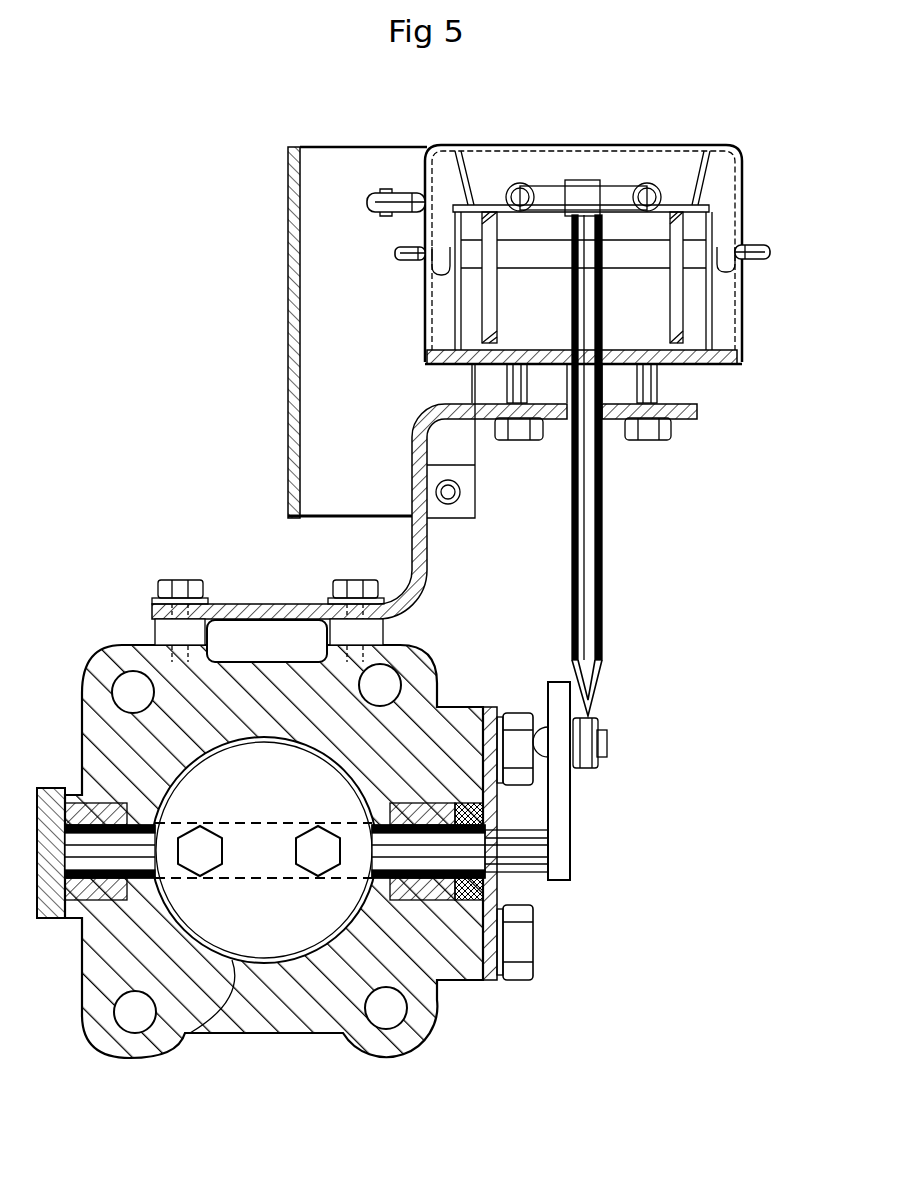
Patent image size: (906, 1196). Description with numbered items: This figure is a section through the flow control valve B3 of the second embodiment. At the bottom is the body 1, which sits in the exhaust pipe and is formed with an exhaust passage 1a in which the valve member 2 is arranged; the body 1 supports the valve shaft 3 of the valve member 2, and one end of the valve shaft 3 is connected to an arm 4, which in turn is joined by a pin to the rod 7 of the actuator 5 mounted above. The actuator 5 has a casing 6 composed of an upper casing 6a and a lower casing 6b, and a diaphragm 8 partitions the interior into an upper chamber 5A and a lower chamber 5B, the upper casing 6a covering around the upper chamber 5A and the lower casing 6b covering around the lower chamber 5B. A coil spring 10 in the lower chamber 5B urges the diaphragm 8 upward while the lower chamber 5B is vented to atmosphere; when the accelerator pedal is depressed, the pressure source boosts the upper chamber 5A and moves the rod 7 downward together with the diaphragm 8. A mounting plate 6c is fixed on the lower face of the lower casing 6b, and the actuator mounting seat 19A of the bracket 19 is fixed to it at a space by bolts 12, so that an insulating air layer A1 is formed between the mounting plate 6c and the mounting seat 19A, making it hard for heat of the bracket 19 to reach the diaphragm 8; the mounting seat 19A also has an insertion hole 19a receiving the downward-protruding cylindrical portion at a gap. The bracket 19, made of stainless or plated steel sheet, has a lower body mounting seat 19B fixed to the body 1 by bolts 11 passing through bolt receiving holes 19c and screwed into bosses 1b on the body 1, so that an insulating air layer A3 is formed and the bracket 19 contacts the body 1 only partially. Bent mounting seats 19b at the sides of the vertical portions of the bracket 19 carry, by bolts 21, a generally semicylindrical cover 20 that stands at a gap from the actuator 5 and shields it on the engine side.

The body 1 is at (260, 830).
The exhaust passage 1a is at (215, 1033).
The bosses 1b is at (163, 632).
The valve member 2 is at (330, 1030).
The valve shaft 3 is at (445, 1003).
The arm 4 is at (562, 840).
The actuator 5 is at (632, 205).
The upper chamber 5A is at (720, 168).
The lower chamber 5B is at (722, 313).
The casing 6 is at (583, 198).
The upper casing 6a is at (660, 146).
The lower casing 6b is at (745, 281).
The mounting plate 6c is at (717, 368).
The rod 7 is at (603, 612).
The diaphragm 8 is at (720, 228).
The coil spring 10 is at (717, 368).
The bolts 11 is at (180, 588).
The bolts 12 is at (521, 437).
The bracket 19 is at (450, 491).
The insertion hole 19a is at (607, 420).
The actuator mounting seat 19A is at (697, 410).
The body mounting seat 19B is at (278, 612).
The bent mounting seats 19b is at (468, 503).
The bolt receiving holes 19c is at (217, 600).
The cover 20 is at (292, 281).
The bolts 21 is at (427, 477).
The air layer A1 is at (615, 385).
The insulating air layer A3 is at (258, 650).
The flow control valve B3 is at (622, 1077).